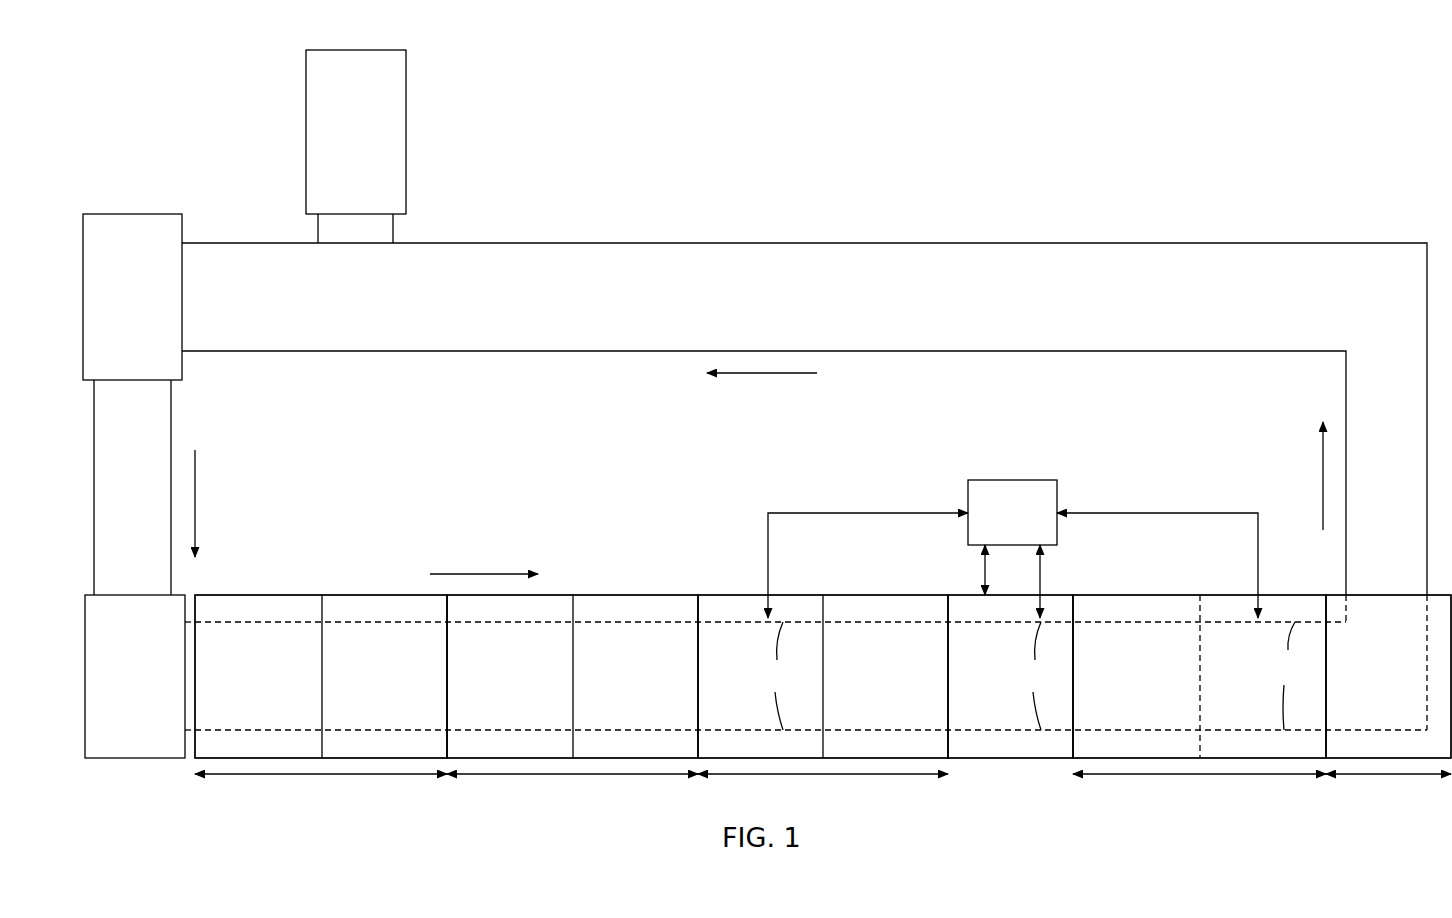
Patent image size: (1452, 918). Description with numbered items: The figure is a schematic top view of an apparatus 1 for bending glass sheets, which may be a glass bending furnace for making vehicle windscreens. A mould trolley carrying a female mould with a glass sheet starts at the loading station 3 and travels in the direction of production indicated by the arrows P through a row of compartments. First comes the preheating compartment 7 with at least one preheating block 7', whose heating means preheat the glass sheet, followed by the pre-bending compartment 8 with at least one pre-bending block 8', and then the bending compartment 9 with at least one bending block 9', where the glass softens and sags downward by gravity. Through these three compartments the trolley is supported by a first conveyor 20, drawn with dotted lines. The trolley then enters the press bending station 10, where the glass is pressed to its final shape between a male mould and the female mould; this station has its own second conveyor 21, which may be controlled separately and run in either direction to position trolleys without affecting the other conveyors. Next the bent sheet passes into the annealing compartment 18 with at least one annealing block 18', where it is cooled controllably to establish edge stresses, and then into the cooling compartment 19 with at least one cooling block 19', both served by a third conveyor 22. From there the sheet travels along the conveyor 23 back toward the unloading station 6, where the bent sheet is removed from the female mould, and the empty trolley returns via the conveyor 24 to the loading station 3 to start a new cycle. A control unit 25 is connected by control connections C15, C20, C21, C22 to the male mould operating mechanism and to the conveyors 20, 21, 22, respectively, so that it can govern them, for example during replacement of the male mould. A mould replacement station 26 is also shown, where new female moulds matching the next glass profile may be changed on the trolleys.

The apparatus 1 is at (1103, 127).
The mould replacement station 26 is at (374, 152).
The unloading station 6 is at (140, 312).
The conveyor 24 is at (144, 496).
The loading station 3 is at (143, 701).
The conveyor 23 is at (847, 319).
The control unit 25 is at (1029, 529).
The preheating compartment 7 is at (321, 806).
The pre-bending compartment 8 is at (572, 806).
The bending compartment 9 is at (823, 805).
The annealing compartment 18 is at (1199, 805).
The cooling compartment 19 is at (1388, 805).
The preheating block 7' is at (321, 676).
The pre-bending block 8' is at (572, 676).
The bending block 9' is at (823, 676).
The press bending station 10 is at (1006, 695).
The annealing block 18' is at (1199, 676).
The cooling block 19' is at (1388, 676).
The conveyor 20 is at (776, 676).
The conveyor 21 is at (1037, 676).
The conveyor 22 is at (1289, 676).
The control connection C20 is at (768, 545).
The control connection C15 is at (985, 572).
The control connection C21 is at (1040, 575).
The control connection C22 is at (1143, 512).
The direction of production P is at (195, 480).